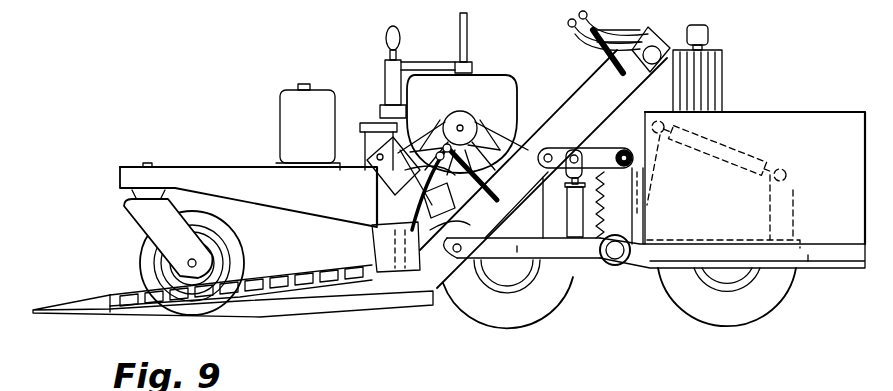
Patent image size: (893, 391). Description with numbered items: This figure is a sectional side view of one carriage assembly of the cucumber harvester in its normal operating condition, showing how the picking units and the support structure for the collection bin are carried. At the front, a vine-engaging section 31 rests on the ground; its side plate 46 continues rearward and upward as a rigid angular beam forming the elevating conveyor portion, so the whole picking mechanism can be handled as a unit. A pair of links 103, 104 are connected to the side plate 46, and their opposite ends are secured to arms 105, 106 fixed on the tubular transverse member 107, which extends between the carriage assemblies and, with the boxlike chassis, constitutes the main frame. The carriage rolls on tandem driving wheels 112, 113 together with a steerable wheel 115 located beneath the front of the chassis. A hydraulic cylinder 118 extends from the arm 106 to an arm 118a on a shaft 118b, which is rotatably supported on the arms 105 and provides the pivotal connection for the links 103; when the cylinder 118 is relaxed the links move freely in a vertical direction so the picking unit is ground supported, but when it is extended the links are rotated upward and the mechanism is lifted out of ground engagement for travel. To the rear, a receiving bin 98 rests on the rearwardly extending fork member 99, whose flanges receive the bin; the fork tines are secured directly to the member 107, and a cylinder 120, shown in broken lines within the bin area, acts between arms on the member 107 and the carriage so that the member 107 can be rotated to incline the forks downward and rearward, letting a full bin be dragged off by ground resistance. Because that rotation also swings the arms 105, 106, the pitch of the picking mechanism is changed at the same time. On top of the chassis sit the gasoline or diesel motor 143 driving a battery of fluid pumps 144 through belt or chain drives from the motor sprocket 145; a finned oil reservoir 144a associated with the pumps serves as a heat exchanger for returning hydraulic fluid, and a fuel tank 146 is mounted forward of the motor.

The vine-engaging section 31 is at (362, 312).
The side plate 46 is at (567, 103).
The receiving bin 98 is at (831, 120).
The fork member 99 is at (838, 262).
The link 103 is at (560, 148).
The link 104 is at (520, 250).
The arm 105 is at (628, 212).
The arm 106 is at (597, 262).
The tubular transverse member 107 is at (621, 266).
The driving wheel 112 is at (708, 316).
The driving wheel 113 is at (463, 308).
The steerable wheel 115 is at (140, 260).
The hydraulic cylinder 118 is at (575, 272).
The arm 118a is at (593, 162).
The shaft 118b is at (632, 160).
The cylinder 120 is at (738, 146).
The motor 143 is at (490, 72).
The fluid pumps 144 is at (380, 183).
The finned oil reservoir 144a is at (726, 63).
The motor sprocket 145 is at (473, 104).
The fuel tank 146 is at (278, 110).